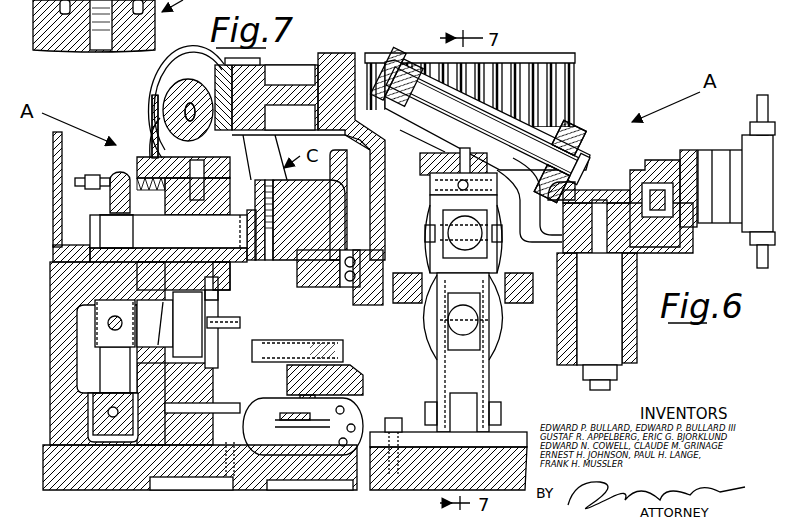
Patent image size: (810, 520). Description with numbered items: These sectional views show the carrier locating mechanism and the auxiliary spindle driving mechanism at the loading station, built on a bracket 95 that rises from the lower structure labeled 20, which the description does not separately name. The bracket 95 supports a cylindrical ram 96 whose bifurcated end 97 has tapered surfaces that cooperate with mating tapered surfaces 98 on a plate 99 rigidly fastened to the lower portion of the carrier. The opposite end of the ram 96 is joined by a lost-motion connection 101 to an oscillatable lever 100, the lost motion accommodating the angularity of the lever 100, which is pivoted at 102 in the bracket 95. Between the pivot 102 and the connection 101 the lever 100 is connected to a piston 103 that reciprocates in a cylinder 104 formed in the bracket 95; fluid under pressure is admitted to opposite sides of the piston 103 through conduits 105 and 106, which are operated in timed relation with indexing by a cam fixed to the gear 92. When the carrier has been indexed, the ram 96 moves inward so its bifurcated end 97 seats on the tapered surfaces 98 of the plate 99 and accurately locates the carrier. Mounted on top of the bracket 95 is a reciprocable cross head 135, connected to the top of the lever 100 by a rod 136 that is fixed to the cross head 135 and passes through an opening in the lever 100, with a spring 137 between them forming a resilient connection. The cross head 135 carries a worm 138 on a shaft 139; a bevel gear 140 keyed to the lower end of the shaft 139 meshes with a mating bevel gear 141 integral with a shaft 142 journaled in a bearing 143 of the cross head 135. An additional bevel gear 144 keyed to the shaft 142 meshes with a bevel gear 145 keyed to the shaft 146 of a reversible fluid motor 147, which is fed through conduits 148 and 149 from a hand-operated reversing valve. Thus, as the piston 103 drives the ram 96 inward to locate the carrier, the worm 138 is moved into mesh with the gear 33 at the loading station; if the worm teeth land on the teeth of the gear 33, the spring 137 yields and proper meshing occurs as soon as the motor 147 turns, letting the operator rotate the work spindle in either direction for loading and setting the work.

In FIG. 7, the base 20 is at (48, 462).
In FIG. 7, the gear 33 is at (213, 62).
In FIG. 6, the gear 33 is at (577, 88).
In FIG. 7, the gear 92 is at (364, 372).
In FIG. 7, the bracket 95 is at (222, 272).
In FIG. 7, the cylindrical ram 96 is at (222, 262).
In FIG. 7, the bifurcated end 97 is at (235, 234).
In FIG. 7, the mating tapered surfaces 98 is at (250, 180).
In FIG. 7, the plate 99 is at (285, 262).
In FIG. 7, the oscillatable lever 100 is at (110, 358).
In FIG. 7, the lost-motion connection 101 is at (110, 233).
In FIG. 7, the pivot 102 is at (108, 413).
In FIG. 7, the piston 103 is at (200, 303).
In FIG. 7, the cylinder 104 is at (168, 302).
In FIG. 7, the conduit 105 is at (242, 322).
In FIG. 7, the conduit 106 is at (232, 403).
In FIG. 7, the cross head 135 is at (137, 176).
In FIG. 7, the rod 136 is at (106, 192).
In FIG. 7, the spring 137 is at (145, 168).
In FIG. 7, the worm 138 is at (163, 122).
In FIG. 6, the worm 138 is at (463, 115).
In FIG. 7, the shaft 139 is at (170, 104).
In FIG. 6, the shaft 139 is at (433, 95).
In FIG. 6, the bevel gear 140 is at (605, 140).
In FIG. 6, the mating bevel gear 141 is at (611, 196).
In FIG. 6, the shaft 142 is at (598, 258).
In FIG. 6, the bearing 143 is at (626, 346).
In FIG. 6, the additional bevel gear 144 is at (556, 195).
In FIG. 6, the bevel gear 145 is at (636, 166).
In FIG. 6, the shaft 146 is at (690, 220).
In FIG. 6, the reversible fluid motor 147 is at (736, 234).
In FIG. 6, the conduit 148 is at (753, 115).
In FIG. 6, the conduit 149 is at (753, 264).